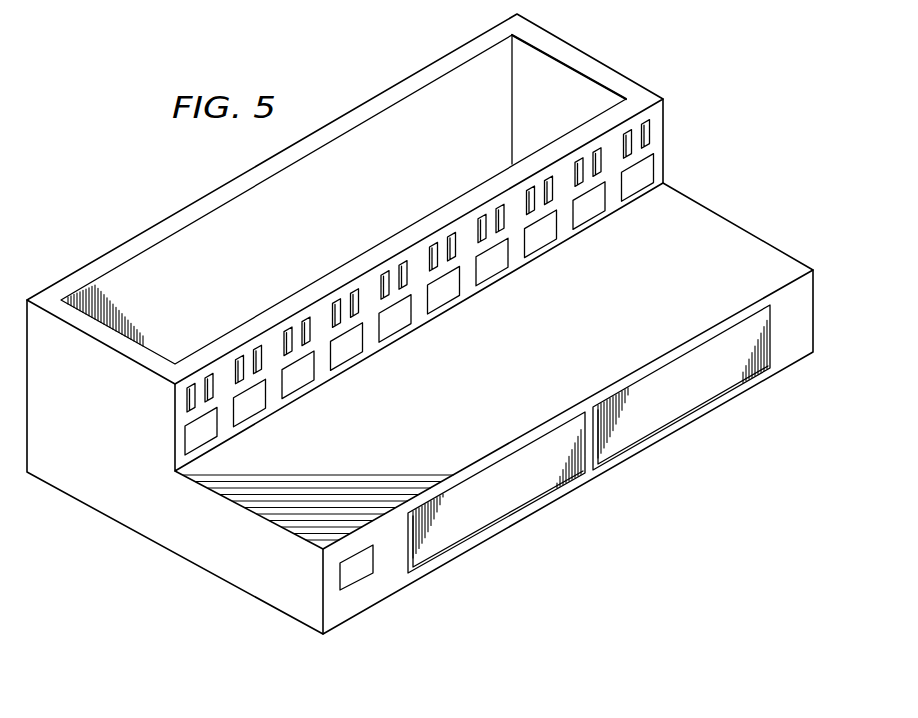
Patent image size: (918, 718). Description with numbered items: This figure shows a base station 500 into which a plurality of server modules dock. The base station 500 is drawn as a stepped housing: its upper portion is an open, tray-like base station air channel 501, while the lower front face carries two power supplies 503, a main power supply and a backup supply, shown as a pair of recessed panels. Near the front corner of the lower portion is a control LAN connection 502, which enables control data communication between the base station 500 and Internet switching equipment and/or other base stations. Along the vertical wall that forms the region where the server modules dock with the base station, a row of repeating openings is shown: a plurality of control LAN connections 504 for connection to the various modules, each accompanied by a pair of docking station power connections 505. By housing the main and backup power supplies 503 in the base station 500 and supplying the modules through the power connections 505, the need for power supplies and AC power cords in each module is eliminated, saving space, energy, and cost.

The base station 500 is at (701, 55).
The base station air channel 501 is at (173, 232).
The control LAN connection 502 is at (357, 567).
The power supplies 503 is at (497, 493).
The control LAN connections 504 is at (643, 172).
The docking station power connections 505 is at (652, 132).